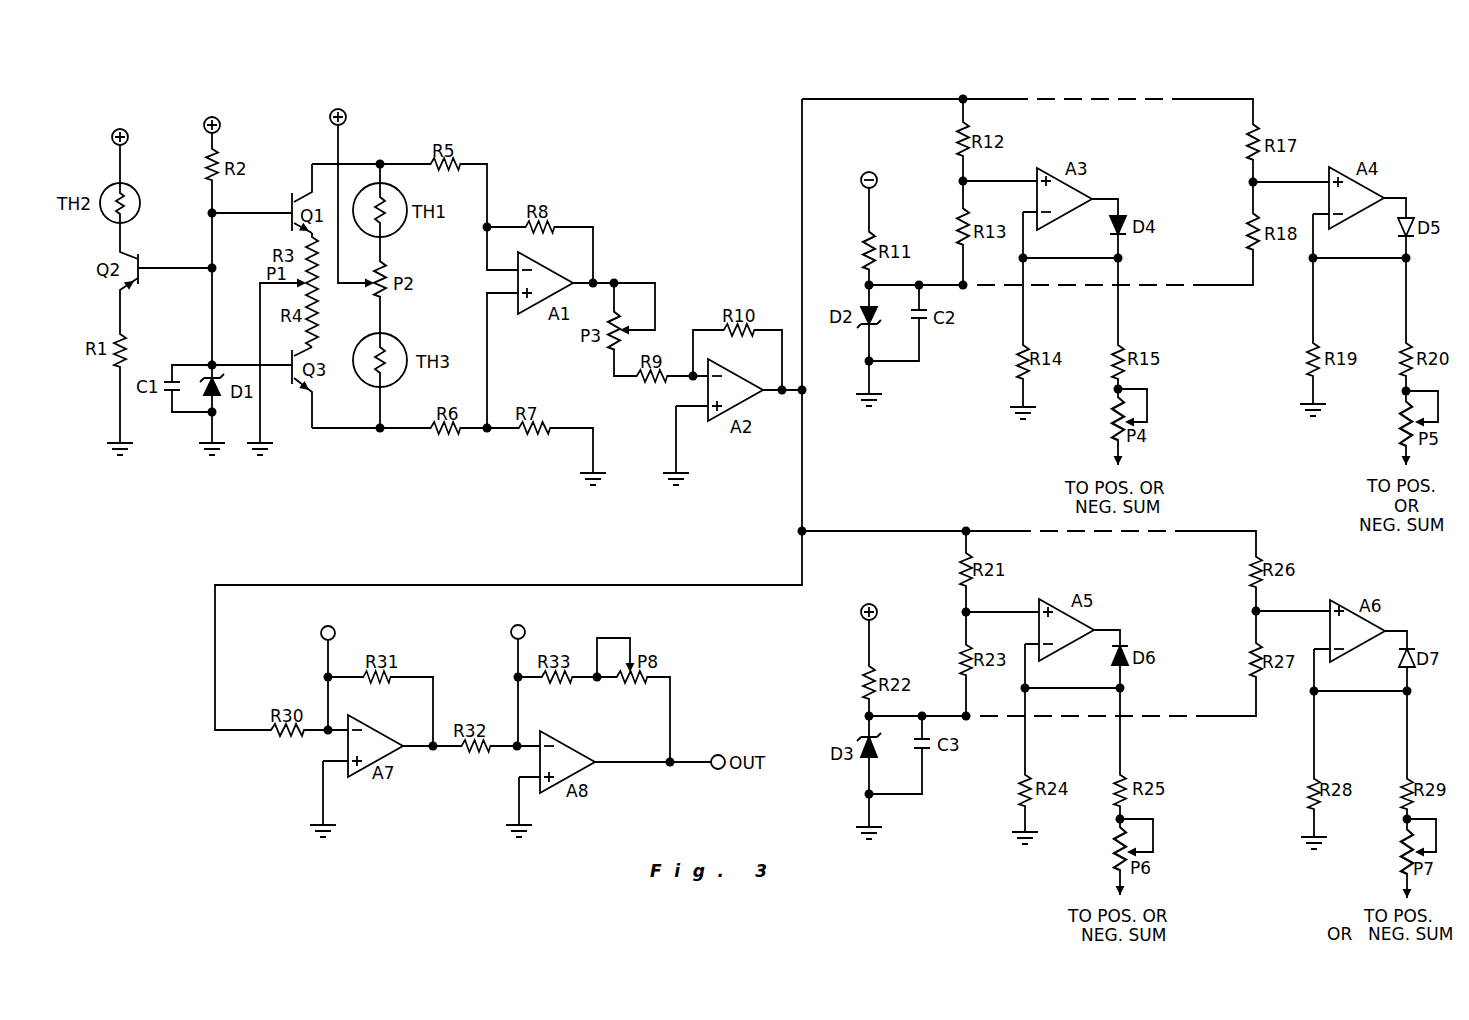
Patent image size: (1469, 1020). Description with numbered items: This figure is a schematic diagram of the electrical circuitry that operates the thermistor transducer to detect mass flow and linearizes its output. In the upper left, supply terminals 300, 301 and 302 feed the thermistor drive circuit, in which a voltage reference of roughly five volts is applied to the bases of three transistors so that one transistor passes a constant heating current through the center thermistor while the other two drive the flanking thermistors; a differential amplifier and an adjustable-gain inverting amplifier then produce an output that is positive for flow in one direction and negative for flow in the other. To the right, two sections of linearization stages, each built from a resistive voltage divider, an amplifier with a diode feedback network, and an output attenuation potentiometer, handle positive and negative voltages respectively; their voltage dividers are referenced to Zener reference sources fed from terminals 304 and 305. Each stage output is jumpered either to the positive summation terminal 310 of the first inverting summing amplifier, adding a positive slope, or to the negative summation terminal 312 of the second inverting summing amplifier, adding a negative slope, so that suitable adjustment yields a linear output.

The +12V supply terminal 300 is at (127, 132).
The +12V supply terminal 301 is at (219, 120).
The +12V supply terminal 302 is at (345, 112).
The -12V supply terminal 304 is at (876, 175).
The +12V supply terminal 305 is at (877, 607).
The positive summation terminal 310 is at (335, 638).
The negative summation terminal 312 is at (525, 637).